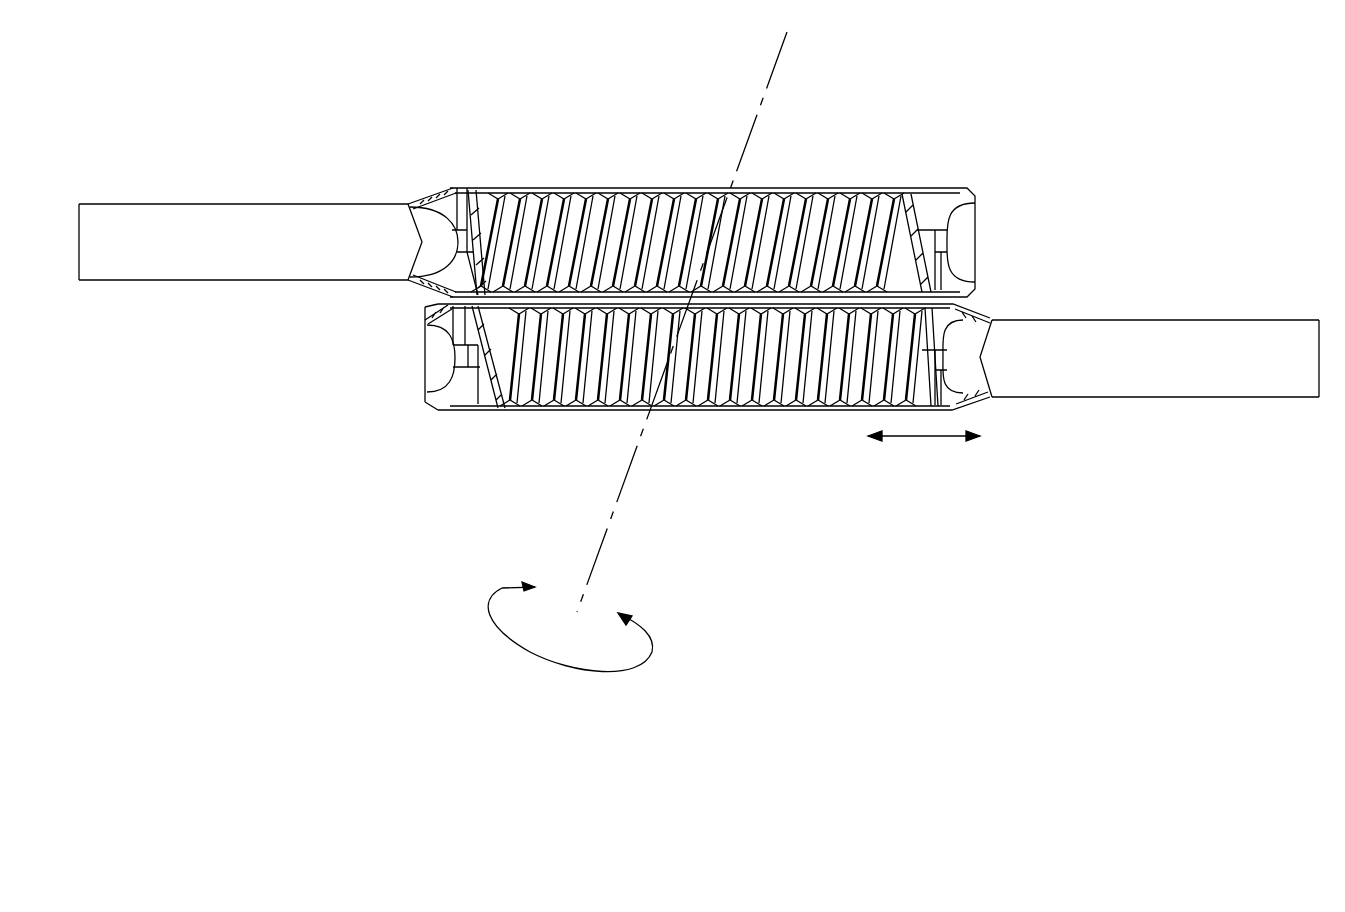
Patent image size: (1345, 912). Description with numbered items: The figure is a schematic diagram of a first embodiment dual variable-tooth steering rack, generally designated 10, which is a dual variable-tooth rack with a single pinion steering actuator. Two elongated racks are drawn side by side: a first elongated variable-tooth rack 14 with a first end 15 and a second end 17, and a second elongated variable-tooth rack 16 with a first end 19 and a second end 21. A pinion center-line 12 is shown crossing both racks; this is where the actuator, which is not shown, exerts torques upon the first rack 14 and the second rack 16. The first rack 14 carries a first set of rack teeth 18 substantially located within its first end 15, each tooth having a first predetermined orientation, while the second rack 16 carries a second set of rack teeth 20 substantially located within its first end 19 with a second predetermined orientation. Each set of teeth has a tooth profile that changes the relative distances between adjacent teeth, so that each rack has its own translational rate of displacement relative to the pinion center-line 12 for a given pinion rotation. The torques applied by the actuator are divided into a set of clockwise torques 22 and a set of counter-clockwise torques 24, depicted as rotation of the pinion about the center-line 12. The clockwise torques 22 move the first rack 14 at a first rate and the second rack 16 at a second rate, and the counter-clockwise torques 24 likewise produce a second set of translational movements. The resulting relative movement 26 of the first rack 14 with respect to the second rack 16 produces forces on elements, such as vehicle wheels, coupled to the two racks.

The dual variable-tooth rack with single pinion steering actuator 10 is at (255, 553).
The pinion center-line 12 is at (747, 135).
The first elongated variable-tooth rack 14 is at (1108, 320).
The first end 15 is at (442, 370).
The second elongated variable-tooth rack 16 is at (188, 203).
The second end 17 is at (1240, 380).
The first set of rack teeth 18 is at (600, 378).
The first end 19 is at (965, 243).
The second set of rack teeth 20 is at (777, 232).
The second end 21 is at (115, 222).
The set of clockwise torques 22 is at (502, 588).
The set of counter-clockwise torques 24 is at (645, 630).
The relative movement 26 is at (918, 436).